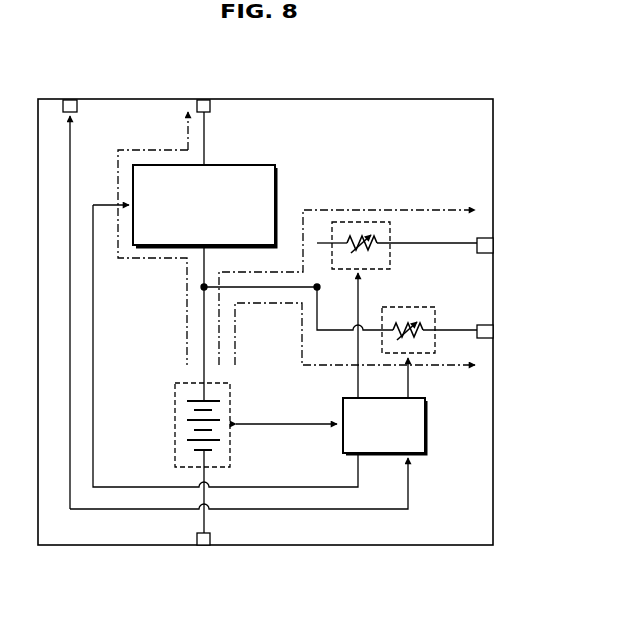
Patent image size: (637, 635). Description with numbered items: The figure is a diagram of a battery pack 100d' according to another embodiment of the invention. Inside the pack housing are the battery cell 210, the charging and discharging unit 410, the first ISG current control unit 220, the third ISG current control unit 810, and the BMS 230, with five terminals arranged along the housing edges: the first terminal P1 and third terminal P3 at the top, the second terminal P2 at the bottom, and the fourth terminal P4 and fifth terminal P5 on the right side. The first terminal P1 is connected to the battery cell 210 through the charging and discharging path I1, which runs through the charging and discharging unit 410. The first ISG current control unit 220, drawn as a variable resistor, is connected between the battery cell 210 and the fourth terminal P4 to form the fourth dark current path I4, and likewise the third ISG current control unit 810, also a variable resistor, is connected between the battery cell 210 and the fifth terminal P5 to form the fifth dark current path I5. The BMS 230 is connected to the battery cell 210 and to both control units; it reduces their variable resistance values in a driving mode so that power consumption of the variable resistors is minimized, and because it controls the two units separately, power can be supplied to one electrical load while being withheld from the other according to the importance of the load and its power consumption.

The battery pack 100d' is at (265, 312).
The charging and discharging unit 410 is at (232, 165).
The first ISG current control unit 220 is at (390, 235).
The third ISG current control unit 810 is at (410, 307).
The battery cell 210 is at (232, 385).
The BMS 230 is at (425, 398).
The first terminal P1 is at (204, 238).
The second terminal P2 is at (204, 507).
The third terminal P3 is at (70, 292).
The fourth terminal P4 is at (498, 246).
The fifth terminal P5 is at (498, 332).
The charging and discharging path I1 is at (153, 238).
The fourth dark current path I4 is at (347, 287).
The fifth dark current path I5 is at (355, 334).